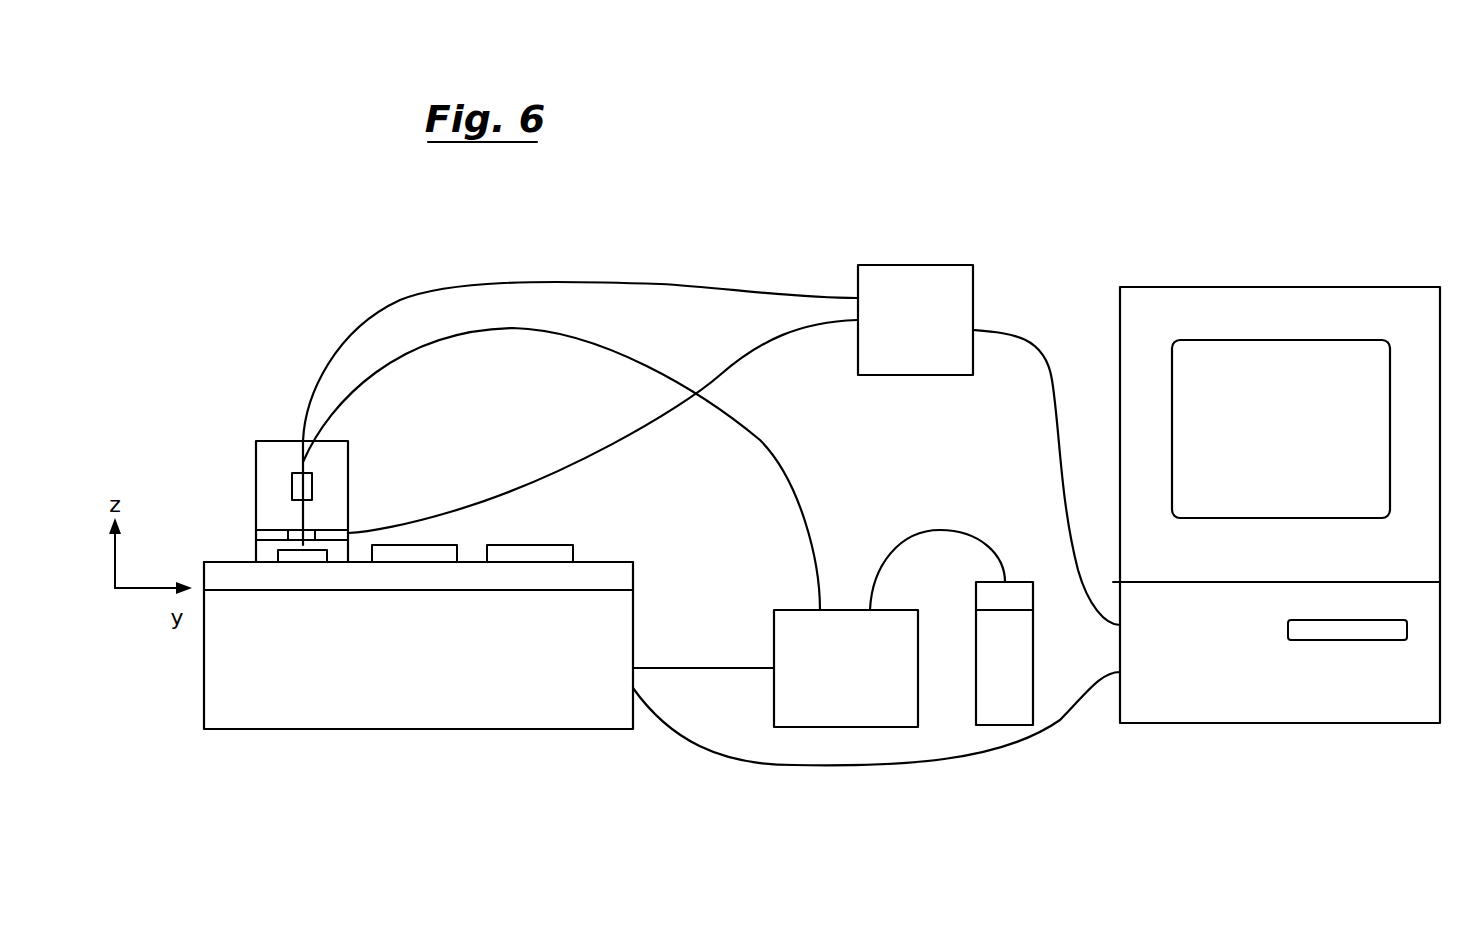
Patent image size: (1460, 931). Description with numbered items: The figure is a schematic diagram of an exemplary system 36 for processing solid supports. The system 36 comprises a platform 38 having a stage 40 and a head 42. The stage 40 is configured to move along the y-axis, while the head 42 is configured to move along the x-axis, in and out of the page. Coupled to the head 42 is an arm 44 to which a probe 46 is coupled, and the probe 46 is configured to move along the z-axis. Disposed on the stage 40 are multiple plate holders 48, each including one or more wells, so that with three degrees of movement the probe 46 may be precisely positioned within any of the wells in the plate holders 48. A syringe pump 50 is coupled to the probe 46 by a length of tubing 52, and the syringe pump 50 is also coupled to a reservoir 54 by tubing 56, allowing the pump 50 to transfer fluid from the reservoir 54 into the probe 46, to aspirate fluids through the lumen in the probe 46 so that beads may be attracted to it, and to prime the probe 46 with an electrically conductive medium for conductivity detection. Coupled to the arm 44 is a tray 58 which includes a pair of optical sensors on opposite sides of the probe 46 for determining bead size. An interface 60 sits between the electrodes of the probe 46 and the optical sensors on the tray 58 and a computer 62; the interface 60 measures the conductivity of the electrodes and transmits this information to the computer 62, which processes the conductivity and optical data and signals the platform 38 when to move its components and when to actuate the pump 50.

The system 36 is at (868, 180).
The platform 38 is at (288, 707).
The stage 40 is at (608, 558).
The head 42 is at (256, 472).
The arm 44 is at (312, 480).
The probe 46 is at (303, 517).
The plate holders 48 is at (280, 553).
The syringe pump 50 is at (790, 633).
The tubing 52 is at (757, 438).
The reservoir 54 is at (1015, 670).
The tubing 56 is at (947, 528).
The tray 58 is at (337, 541).
The interface 60 is at (938, 272).
The computer 62 is at (1183, 707).